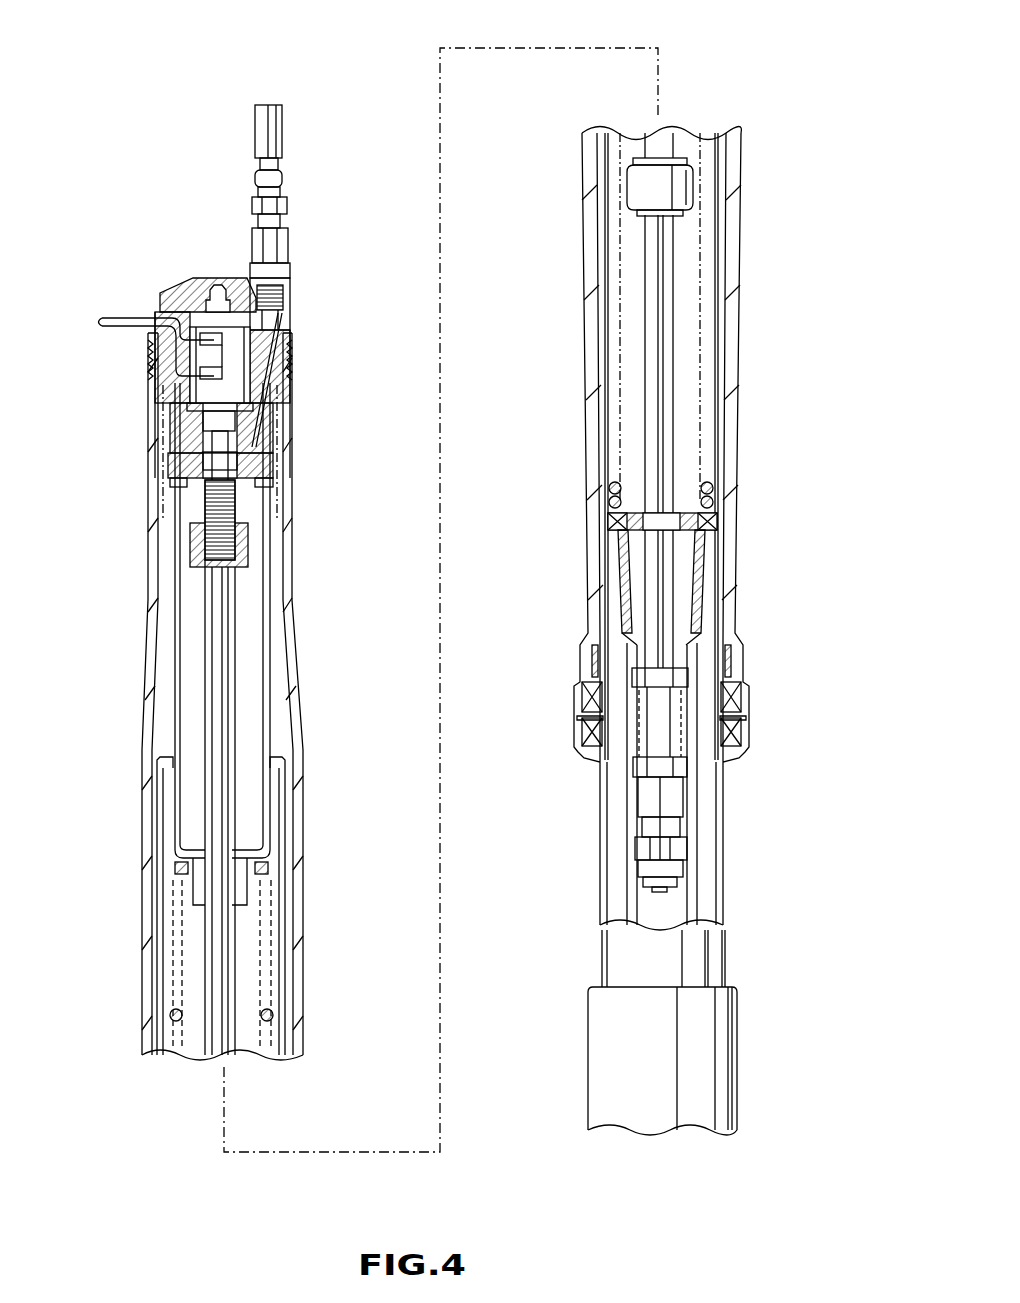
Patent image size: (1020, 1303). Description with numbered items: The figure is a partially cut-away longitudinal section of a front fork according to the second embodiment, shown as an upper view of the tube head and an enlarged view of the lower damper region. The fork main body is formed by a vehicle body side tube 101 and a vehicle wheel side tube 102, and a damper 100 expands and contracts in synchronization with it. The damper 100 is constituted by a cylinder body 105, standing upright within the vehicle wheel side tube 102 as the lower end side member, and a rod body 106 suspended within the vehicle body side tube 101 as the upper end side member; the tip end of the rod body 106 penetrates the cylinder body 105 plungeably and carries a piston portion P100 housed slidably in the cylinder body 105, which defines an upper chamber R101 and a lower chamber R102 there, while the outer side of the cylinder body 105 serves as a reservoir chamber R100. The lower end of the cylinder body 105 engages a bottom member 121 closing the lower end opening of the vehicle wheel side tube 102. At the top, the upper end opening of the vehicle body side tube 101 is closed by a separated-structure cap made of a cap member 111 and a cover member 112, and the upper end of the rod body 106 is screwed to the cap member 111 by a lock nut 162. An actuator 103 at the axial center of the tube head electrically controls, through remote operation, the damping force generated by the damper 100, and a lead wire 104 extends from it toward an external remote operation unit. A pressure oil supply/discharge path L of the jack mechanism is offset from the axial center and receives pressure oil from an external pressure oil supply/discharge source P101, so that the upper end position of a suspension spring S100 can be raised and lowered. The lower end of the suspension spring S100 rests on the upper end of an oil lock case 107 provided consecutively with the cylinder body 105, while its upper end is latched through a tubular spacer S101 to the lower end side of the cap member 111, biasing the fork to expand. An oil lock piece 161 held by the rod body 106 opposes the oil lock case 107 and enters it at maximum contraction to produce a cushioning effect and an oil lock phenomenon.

The damper 100 is at (247, 646).
The vehicle body side tube 101 is at (148, 676).
The vehicle wheel side tube 102 is at (155, 430).
The actuator 103 is at (198, 304).
The lead wire 104 is at (120, 318).
The cylinder body 105 is at (697, 876).
The rod body 106 is at (238, 674).
The oil lock case 107 is at (702, 578).
The cap member 111 is at (284, 311).
The cover member 112 is at (204, 282).
The bottom member 121 is at (737, 1090).
The oil lock piece 161 is at (698, 186).
The lock nut 162 is at (252, 546).
The pressure oil supply/discharge path L is at (264, 413).
The piston portion P100 is at (683, 885).
The pressure oil supply/discharge source P101 is at (268, 103).
The reservoir chamber R100 is at (705, 808).
The upper chamber R101 is at (637, 808).
The lower chamber R102 is at (650, 905).
The suspension spring S100 is at (178, 892).
The spacer S101 is at (178, 600).